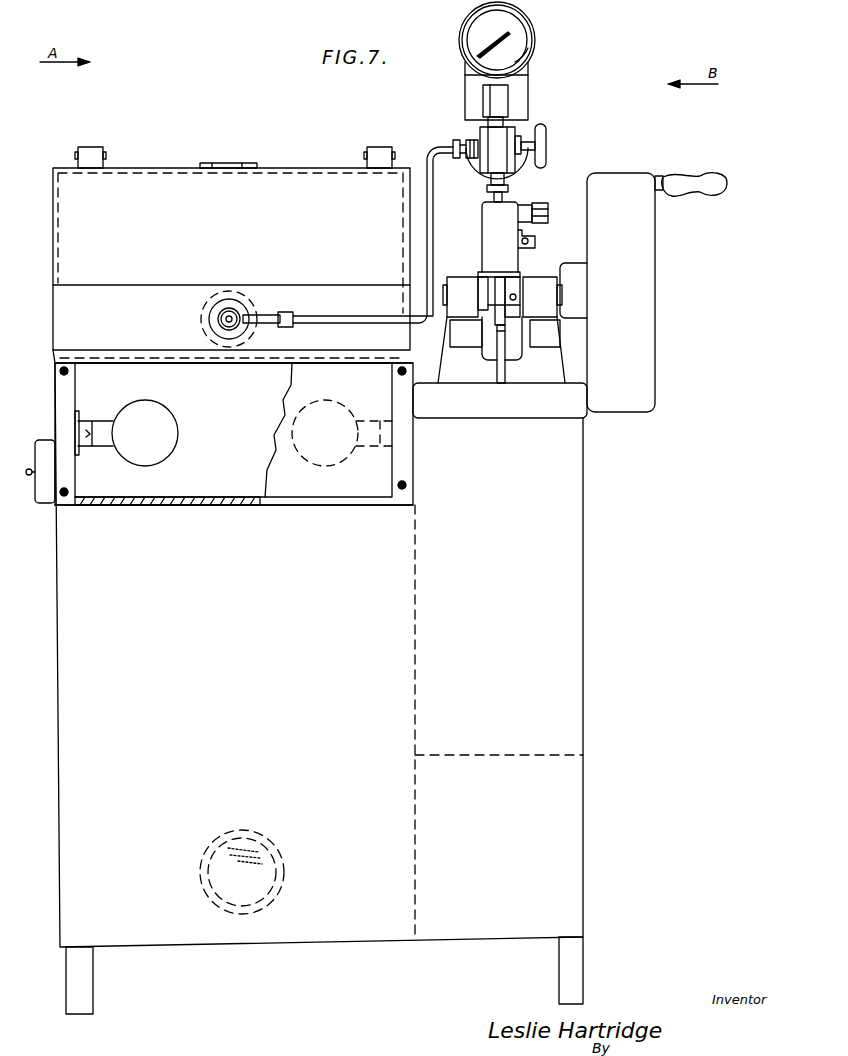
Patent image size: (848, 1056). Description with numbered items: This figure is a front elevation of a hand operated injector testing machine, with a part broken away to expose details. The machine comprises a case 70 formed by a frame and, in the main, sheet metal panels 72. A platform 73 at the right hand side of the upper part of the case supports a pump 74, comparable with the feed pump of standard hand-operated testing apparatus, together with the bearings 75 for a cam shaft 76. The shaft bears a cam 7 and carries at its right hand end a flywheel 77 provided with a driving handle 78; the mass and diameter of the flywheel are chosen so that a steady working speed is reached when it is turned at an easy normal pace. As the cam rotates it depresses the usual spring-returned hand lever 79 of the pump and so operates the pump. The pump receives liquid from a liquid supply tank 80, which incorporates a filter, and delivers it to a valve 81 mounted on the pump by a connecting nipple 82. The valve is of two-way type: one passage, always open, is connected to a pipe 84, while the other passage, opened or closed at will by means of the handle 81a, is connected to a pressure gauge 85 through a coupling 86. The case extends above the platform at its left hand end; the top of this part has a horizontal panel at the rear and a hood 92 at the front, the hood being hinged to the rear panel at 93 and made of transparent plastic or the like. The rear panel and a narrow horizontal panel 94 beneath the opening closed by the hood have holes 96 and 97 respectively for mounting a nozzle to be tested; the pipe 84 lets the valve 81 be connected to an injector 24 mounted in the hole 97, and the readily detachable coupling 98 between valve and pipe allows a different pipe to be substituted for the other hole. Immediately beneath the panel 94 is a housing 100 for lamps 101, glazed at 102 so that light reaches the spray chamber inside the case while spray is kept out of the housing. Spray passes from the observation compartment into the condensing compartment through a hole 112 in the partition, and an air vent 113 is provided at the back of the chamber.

The cam 7 is at (528, 307).
The injector 24 is at (208, 320).
The case 70 is at (62, 694).
The sheet metal panels 72 is at (425, 721).
The platform 73 is at (457, 408).
The pump 74 is at (498, 226).
The bearings 75 is at (461, 280).
The cam shaft 76 is at (490, 299).
The flywheel 77 is at (655, 338).
The driving handle 78 is at (700, 180).
The hand lever 79 is at (501, 388).
The liquid supply tank 80 is at (529, 85).
The valve 81 is at (495, 152).
The handle 81a is at (546, 137).
The connecting nipple 82 is at (487, 189).
The pipe 84 is at (430, 242).
The pressure gauge 85 is at (518, 38).
The coupling 86 is at (500, 100).
The hood 92 is at (231, 259).
The hinge 93 is at (93, 147).
The narrow horizontal panel 94 is at (233, 324).
The hole 96 is at (228, 163).
The hole 97 is at (230, 312).
The coupling 98 is at (457, 142).
The housing 100 is at (165, 505).
The lamps 101 is at (165, 425).
The glazing 102 is at (215, 478).
The hole 112 is at (256, 305).
The air vent 113 is at (242, 914).